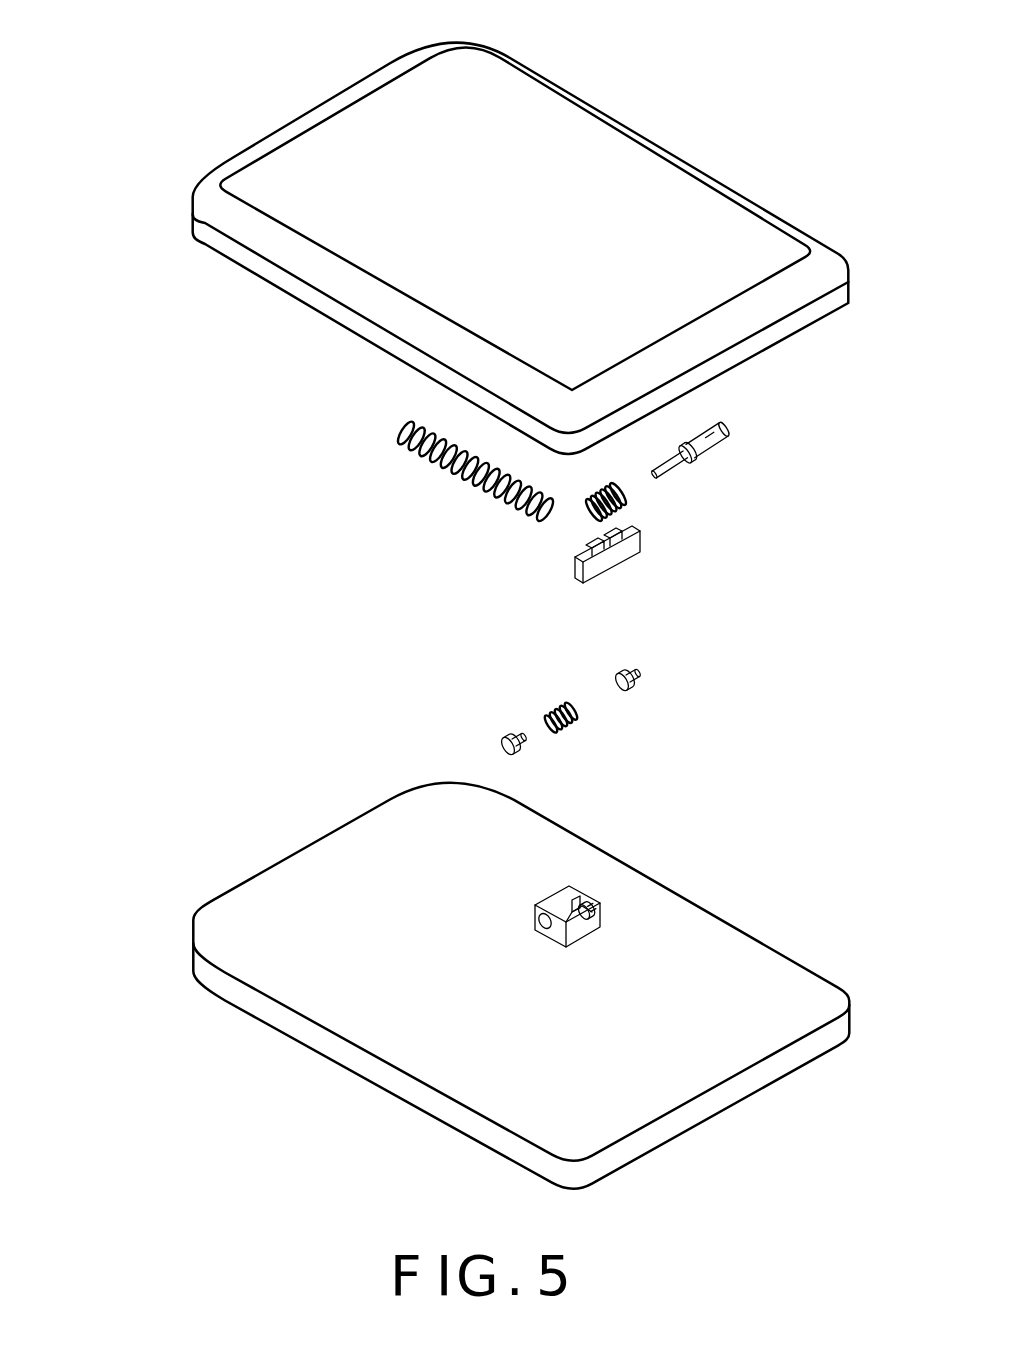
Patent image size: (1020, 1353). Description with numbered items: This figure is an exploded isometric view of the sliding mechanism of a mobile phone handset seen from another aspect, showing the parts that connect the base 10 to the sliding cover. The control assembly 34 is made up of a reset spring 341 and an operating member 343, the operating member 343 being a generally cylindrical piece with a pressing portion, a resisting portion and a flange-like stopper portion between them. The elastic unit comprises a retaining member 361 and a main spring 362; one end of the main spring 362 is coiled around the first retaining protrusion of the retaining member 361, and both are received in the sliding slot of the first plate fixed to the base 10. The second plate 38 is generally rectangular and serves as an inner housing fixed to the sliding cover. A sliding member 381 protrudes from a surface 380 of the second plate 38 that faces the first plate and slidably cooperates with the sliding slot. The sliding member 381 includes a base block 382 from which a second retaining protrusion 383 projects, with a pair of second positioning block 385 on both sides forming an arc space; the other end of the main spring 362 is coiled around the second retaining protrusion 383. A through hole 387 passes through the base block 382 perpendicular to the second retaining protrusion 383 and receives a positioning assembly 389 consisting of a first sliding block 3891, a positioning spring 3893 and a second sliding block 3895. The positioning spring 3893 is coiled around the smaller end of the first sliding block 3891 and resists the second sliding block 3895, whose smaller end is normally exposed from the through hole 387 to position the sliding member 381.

The base 10 is at (578, 70).
The control assembly 34 is at (737, 464).
The reset spring 341 is at (627, 501).
The operating member 343 is at (718, 440).
The retaining member 361 is at (628, 552).
The main spring 362 is at (403, 440).
The second plate 38 is at (465, 963).
The surface 380 is at (268, 917).
The sliding member 381 is at (661, 842).
The base block 382 is at (546, 906).
The second retaining protrusion 383 is at (590, 902).
The second positioning block 385 is at (578, 907).
The through hole 387 is at (566, 906).
The positioning assembly 389 is at (504, 675).
The first sliding block 3891 is at (505, 735).
The positioning spring 3893 is at (560, 706).
The second sliding block 3895 is at (573, 653).